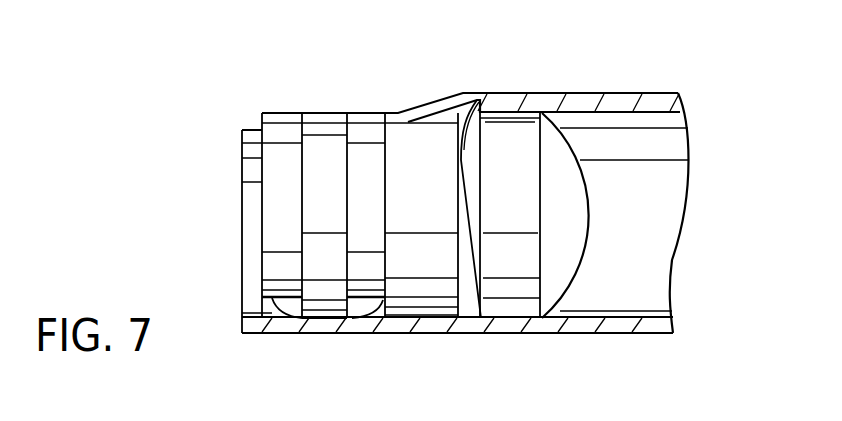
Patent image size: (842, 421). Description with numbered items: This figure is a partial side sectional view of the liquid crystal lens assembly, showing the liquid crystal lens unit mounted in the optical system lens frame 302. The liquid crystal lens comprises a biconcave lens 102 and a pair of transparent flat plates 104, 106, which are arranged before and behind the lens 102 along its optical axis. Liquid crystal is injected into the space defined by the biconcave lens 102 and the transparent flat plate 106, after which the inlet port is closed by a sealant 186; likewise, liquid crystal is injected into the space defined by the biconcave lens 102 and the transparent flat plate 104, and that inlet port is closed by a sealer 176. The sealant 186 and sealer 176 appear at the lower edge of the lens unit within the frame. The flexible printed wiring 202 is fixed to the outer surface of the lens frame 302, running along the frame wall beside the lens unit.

The biconcave lens 102 is at (330, 137).
The transparent flat plate 104 is at (372, 137).
The transparent flat plate 106 is at (288, 137).
The sealer 176 is at (367, 307).
The sealant 186 is at (293, 307).
The flexible printed wiring 202 is at (440, 99).
The lens frame 302 is at (617, 334).